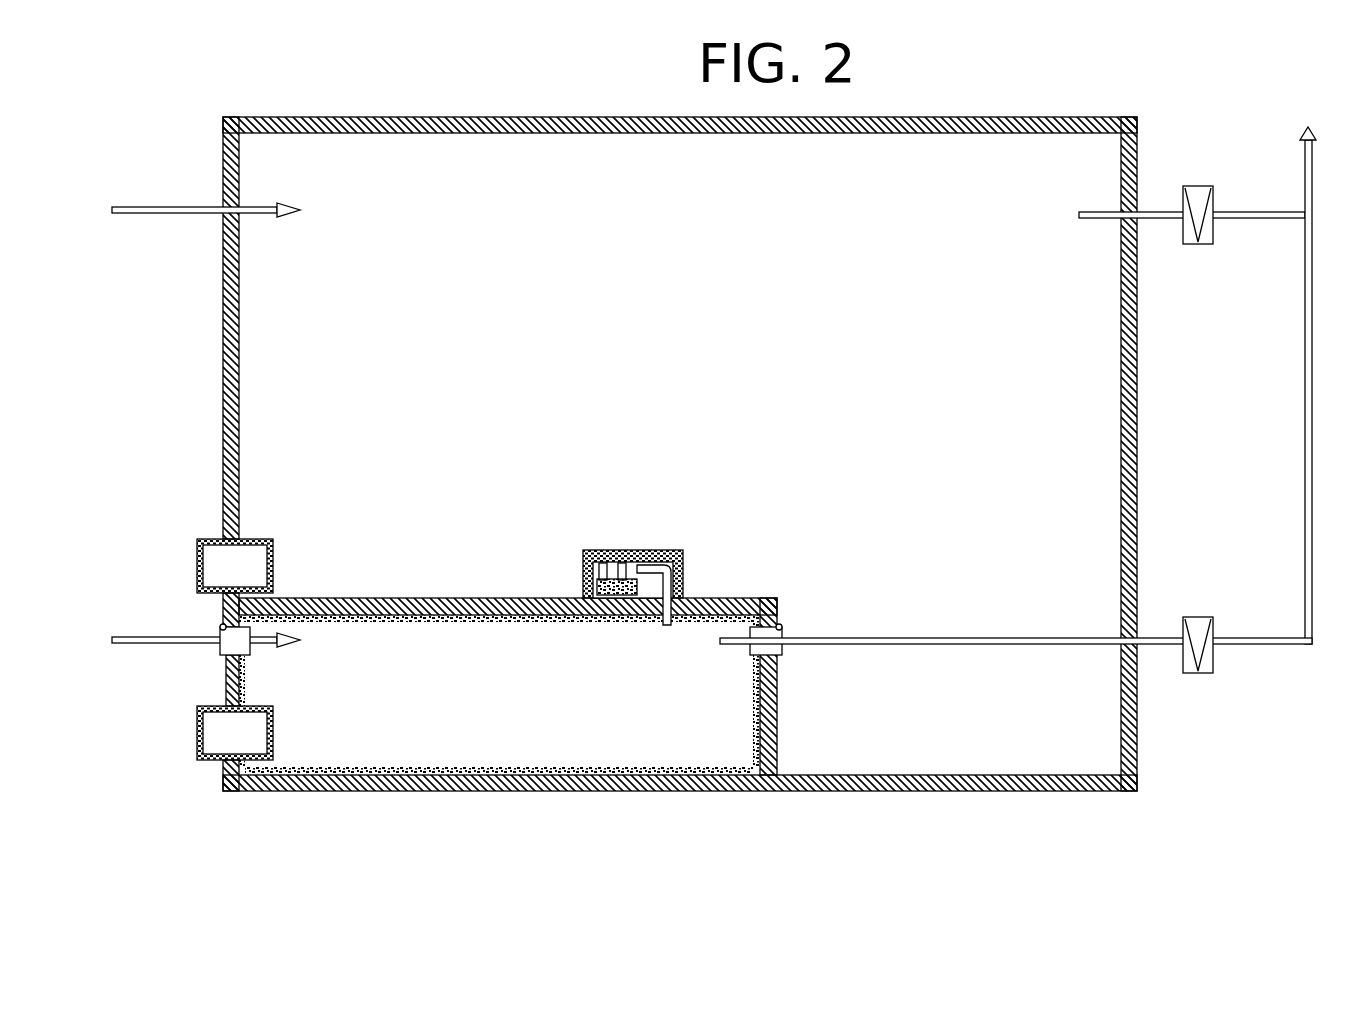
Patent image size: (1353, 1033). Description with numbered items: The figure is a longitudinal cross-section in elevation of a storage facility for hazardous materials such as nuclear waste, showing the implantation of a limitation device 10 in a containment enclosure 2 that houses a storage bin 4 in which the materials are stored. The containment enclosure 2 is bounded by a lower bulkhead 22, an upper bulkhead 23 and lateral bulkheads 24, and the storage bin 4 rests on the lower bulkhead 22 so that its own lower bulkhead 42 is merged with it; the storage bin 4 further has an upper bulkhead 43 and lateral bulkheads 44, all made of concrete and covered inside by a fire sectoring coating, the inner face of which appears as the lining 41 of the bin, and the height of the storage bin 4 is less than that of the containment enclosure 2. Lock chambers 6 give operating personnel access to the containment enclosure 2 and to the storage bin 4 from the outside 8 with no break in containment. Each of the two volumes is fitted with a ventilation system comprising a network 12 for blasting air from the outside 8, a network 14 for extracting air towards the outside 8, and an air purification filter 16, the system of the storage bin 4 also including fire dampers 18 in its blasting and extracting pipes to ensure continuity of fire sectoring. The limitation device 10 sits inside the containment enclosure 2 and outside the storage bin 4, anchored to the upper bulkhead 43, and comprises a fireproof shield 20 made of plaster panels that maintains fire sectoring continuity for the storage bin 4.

The containment enclosure 2 is at (1037, 112).
The storage bin 4 is at (503, 681).
The lock chambers 6 is at (212, 564).
The outside 8 is at (200, 405).
The limitation device 10 is at (654, 538).
The network for blasting air 12 is at (142, 207).
The network for extracting air 14 is at (1095, 225).
The air purification filter 16 is at (1197, 205).
The fire dampers 18 is at (222, 651).
The fireproof shield 20 is at (684, 576).
The lower bulkhead 22 is at (1032, 775).
The upper bulkhead 23 is at (853, 138).
The lateral bulkheads 24 is at (240, 337).
The inner bottom wall 41 is at (481, 766).
The lower bulkhead 42 is at (614, 791).
The upper bulkhead 43 is at (535, 599).
The lateral bulkheads 44 is at (226, 682).